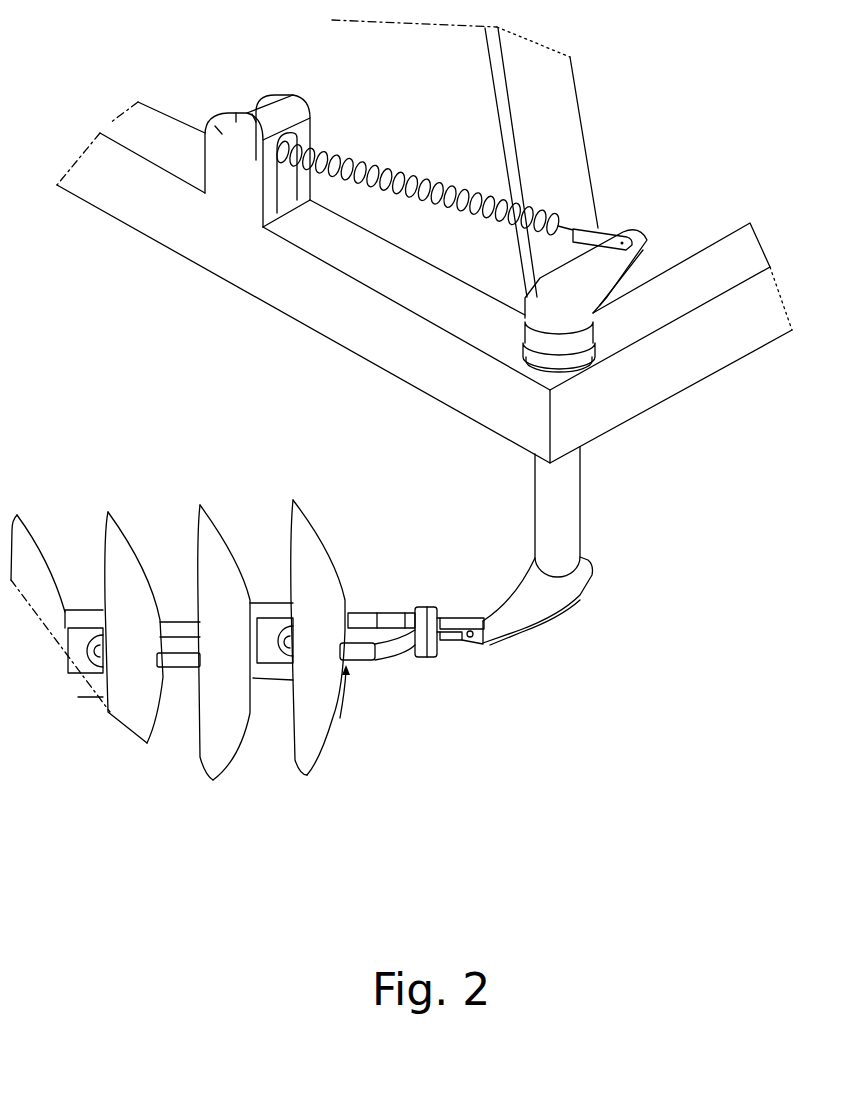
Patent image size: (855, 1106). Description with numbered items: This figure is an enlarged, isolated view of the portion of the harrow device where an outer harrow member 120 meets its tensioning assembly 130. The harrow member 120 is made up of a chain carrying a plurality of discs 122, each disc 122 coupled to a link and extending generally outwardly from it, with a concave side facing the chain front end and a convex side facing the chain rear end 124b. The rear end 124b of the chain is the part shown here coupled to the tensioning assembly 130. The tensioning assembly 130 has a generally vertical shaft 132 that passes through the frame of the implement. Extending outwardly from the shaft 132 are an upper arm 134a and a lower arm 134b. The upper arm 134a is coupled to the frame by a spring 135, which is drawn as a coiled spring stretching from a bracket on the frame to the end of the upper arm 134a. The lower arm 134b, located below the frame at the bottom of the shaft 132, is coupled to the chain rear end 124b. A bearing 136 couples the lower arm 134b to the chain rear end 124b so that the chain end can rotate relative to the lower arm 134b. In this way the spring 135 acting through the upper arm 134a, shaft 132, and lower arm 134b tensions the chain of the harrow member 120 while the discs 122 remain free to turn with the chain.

The harrow member 120 is at (180, 638).
The disc 122 is at (218, 738).
The rear end 124b is at (361, 680).
The tensioning assembly 130 is at (424, 347).
The shaft 132 is at (573, 525).
The upper arm 134a is at (553, 298).
The lower arm 134b is at (520, 605).
The spring 135 is at (368, 183).
The bearing 136 is at (427, 652).